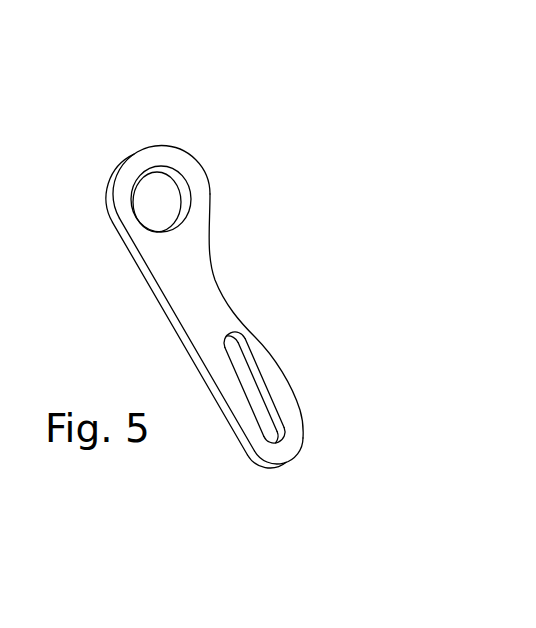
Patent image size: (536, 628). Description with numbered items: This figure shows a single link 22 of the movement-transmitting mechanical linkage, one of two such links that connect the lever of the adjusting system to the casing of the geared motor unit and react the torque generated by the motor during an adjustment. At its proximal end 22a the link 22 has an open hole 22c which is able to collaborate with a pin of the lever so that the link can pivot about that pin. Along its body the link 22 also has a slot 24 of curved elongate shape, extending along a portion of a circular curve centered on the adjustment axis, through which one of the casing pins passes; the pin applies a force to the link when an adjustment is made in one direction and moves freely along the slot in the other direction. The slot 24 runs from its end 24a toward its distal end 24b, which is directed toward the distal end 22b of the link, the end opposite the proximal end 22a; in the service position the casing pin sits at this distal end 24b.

The link 22 is at (264, 284).
The proximal end 22a is at (130, 157).
The distal end 22b is at (279, 463).
The open hole 22c is at (165, 188).
The slot 24 is at (321, 354).
The end of slot 24a is at (237, 348).
The distal end of slot 24b is at (278, 436).